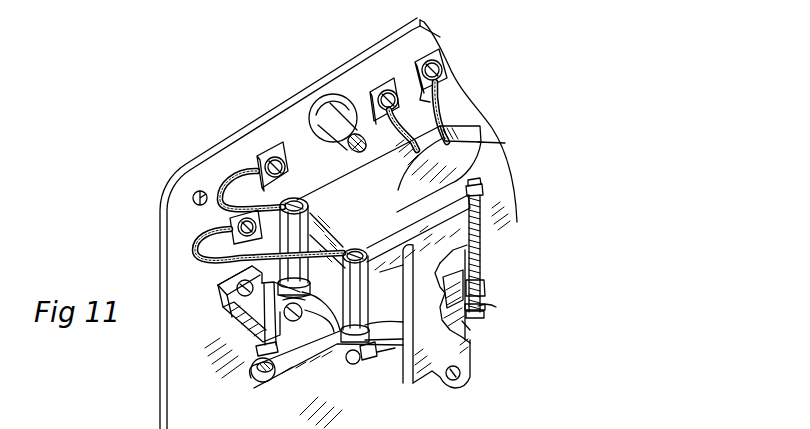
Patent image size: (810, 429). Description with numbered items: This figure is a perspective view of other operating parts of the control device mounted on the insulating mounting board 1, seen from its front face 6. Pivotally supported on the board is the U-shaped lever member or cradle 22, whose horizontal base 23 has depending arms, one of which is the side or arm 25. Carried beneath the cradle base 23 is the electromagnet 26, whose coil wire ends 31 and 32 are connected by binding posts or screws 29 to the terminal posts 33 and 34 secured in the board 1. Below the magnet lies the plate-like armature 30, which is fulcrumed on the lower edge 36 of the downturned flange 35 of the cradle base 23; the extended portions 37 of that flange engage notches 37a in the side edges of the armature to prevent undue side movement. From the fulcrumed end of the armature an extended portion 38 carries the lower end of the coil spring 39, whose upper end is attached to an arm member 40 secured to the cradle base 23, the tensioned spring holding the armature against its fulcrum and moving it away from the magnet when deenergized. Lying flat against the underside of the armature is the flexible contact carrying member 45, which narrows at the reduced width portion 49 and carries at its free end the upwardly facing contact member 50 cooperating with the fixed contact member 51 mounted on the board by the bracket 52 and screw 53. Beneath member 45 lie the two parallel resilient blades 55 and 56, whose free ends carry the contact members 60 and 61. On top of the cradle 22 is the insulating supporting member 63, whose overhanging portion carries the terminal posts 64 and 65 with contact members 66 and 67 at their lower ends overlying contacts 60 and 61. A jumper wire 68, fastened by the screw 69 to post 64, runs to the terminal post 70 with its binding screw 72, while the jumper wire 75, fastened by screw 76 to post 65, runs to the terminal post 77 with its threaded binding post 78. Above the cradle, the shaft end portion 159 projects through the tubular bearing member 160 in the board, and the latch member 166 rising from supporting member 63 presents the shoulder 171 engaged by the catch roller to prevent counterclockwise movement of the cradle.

The supporting member or mounting board 1 is at (256, 117).
The side or front face of the board 6 is at (173, 358).
The lever member or cradle 22 is at (488, 367).
The cradle base 23 is at (433, 232).
The side or arm of the cradle 25 is at (441, 380).
The electromagnet 26 is at (400, 273).
The binding posts or screws 29 is at (371, 94).
The armature 30 is at (464, 321).
The coil wire end 31 is at (402, 128).
The coil wire end 32 is at (447, 108).
The terminal post 33 is at (404, 80).
The terminal post 34 is at (409, 92).
The downturned flange 35 is at (485, 283).
The lower edge of the flange 36 is at (453, 273).
The extended portions 37 is at (486, 316).
The cut-outs or notches 37a is at (486, 308).
The extended portion of the armature 38 is at (520, 307).
The coil spring 39 is at (482, 248).
The arm member 40 is at (477, 182).
The contact carrying member 45 is at (322, 368).
The reduced width portion 49 is at (284, 380).
The upwardly facing contact member 50 is at (268, 383).
The fixed contact member 51 is at (256, 348).
The bracket 52 is at (224, 312).
The screw 53 is at (218, 292).
The contact carrying blade 55 is at (305, 296).
The contact carrying blade 56 is at (383, 353).
The contact member 60 is at (299, 319).
The contact member 61 is at (367, 358).
The supporting member 63 is at (379, 200).
The terminal post 64 is at (292, 286).
The terminal post 65 is at (339, 348).
The contact member 66 is at (272, 297).
The contact member 67 is at (370, 323).
The jumper wire 68 is at (219, 186).
The binding post or screw 69 is at (276, 186).
The terminal post 70 is at (287, 168).
The binding post or screw 72 is at (283, 152).
The jumper wire 75 is at (195, 248).
The screw 76 is at (357, 246).
The terminal post 77 is at (218, 268).
The screw or threaded binding post 78 is at (236, 222).
The inner end portion of the shaft 159 is at (342, 98).
The metallic tubular bearing member 160 is at (322, 95).
The latch member 166 is at (505, 143).
The shoulder 171 is at (473, 143).